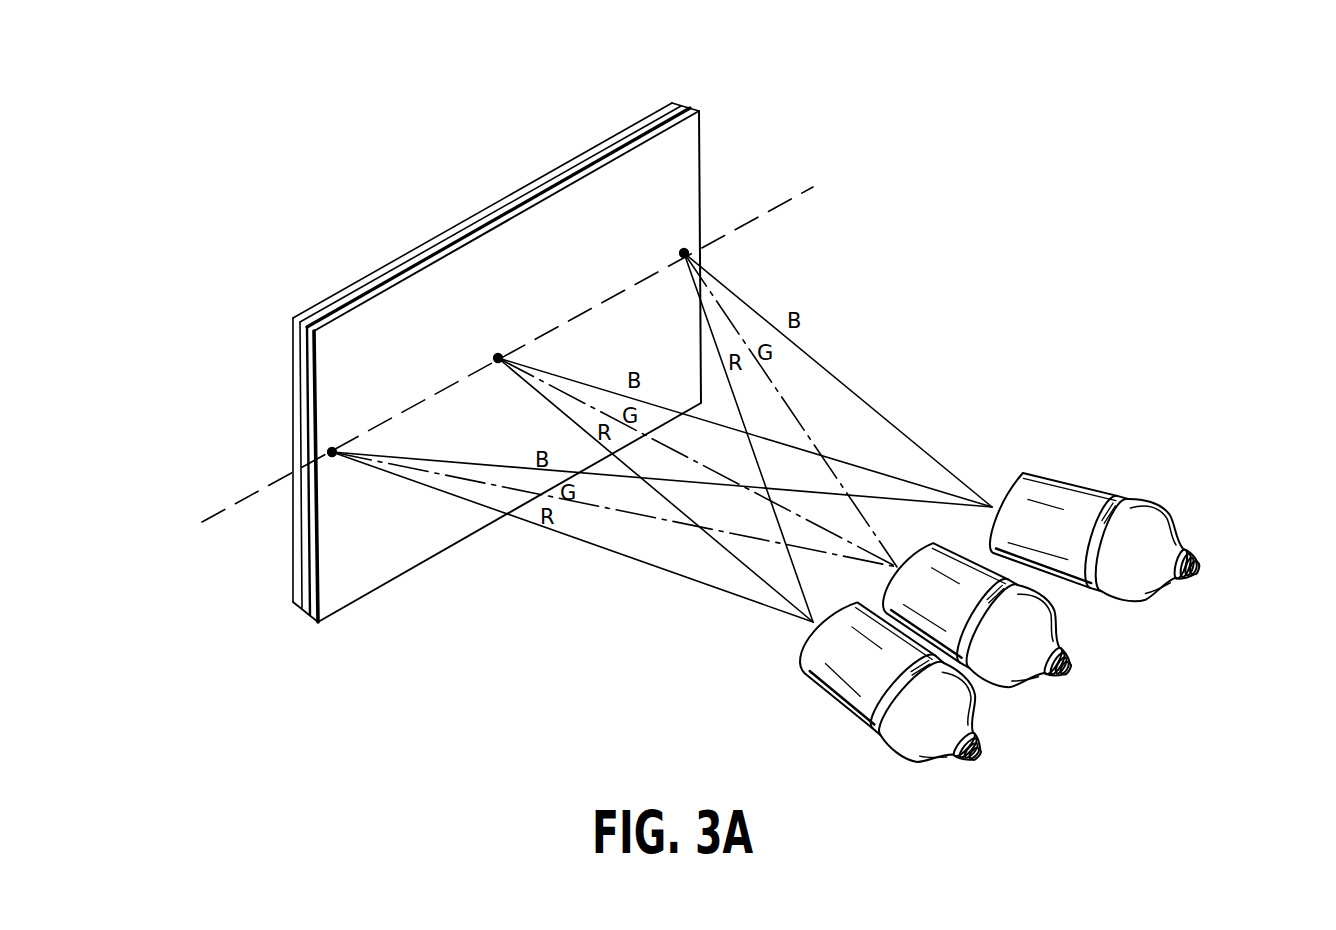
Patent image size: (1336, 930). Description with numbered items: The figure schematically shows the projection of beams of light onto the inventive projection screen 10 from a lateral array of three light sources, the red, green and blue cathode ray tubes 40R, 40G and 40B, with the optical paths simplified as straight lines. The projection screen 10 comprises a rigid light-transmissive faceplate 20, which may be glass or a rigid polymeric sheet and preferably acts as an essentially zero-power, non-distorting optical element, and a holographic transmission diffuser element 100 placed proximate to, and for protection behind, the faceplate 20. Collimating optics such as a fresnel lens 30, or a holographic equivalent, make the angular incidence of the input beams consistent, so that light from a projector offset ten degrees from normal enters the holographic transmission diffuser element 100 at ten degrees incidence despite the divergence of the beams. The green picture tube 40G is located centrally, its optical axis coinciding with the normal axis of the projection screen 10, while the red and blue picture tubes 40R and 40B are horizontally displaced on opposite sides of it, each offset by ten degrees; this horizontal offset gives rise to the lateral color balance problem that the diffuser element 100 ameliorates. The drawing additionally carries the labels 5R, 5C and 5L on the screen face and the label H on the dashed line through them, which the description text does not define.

The projection screen 10 is at (249, 601).
The faceplate 20 is at (312, 306).
The fresnel lens 30 is at (392, 560).
The holographic transmission diffuser element 100 is at (305, 603).
The right screen point 5R is at (332, 450).
The center screen point 5C is at (498, 356).
The left screen point 5L is at (684, 253).
The red picture tube 40R is at (965, 695).
The green picture tube 40G is at (1055, 625).
The blue picture tube 40B is at (1162, 520).
The horizontal axis line H is at (507, 349).